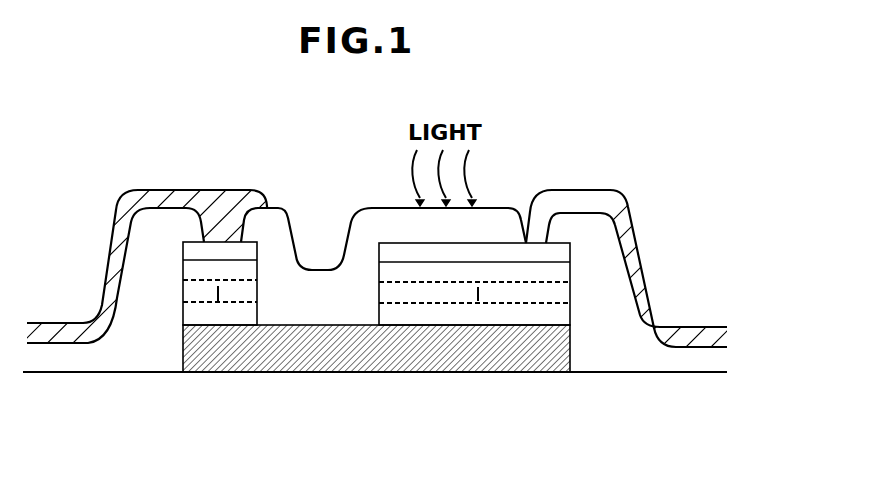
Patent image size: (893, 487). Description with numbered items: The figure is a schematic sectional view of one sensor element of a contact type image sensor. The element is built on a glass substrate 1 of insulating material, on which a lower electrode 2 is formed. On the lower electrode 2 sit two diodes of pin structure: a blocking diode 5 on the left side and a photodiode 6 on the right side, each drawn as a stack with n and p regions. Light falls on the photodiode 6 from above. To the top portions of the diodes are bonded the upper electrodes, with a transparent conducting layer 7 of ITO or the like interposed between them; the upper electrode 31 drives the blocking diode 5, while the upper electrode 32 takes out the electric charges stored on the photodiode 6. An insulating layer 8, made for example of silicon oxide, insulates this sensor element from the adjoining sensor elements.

The glass substrate 1 is at (333, 380).
The lower electrode 2 is at (500, 362).
The blocking diode 5 is at (193, 313).
The photodiode 6 is at (560, 315).
The transparent conducting layer 7 is at (405, 253).
The insulating layer 8 is at (112, 355).
The upper electrode 31 is at (162, 198).
The upper electrode 32 is at (618, 205).